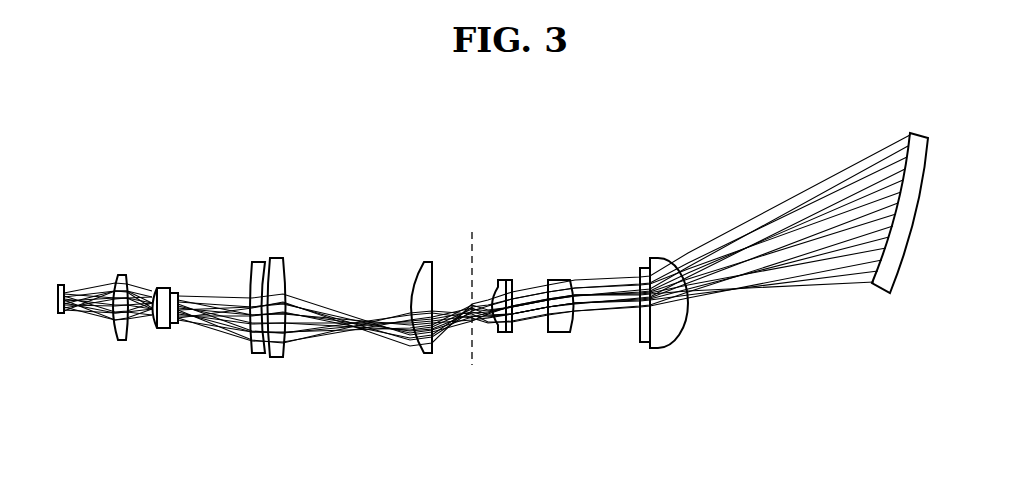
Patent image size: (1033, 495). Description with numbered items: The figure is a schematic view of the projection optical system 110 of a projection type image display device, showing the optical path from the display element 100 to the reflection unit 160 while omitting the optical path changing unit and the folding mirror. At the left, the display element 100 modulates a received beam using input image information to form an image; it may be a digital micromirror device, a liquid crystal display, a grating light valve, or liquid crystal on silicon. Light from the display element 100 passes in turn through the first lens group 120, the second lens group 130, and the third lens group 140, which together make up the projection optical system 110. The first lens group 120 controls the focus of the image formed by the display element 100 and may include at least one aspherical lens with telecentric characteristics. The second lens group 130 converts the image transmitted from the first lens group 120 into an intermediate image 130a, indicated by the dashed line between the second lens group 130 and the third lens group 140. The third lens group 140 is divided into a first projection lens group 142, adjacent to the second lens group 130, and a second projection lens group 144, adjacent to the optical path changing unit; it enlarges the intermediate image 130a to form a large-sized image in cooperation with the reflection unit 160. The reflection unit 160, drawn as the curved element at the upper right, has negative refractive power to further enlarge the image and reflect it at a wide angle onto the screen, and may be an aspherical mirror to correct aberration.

The display element 100 is at (62, 315).
The projection optical system 110 is at (690, 229).
The first lens group 120 is at (180, 347).
The second lens group 130 is at (432, 362).
The intermediate image 130a is at (471, 360).
The third lens group 140 is at (590, 356).
The first projection lens group 142 is at (582, 342).
The second projection lens group 144 is at (656, 336).
The reflection unit 160 is at (883, 282).